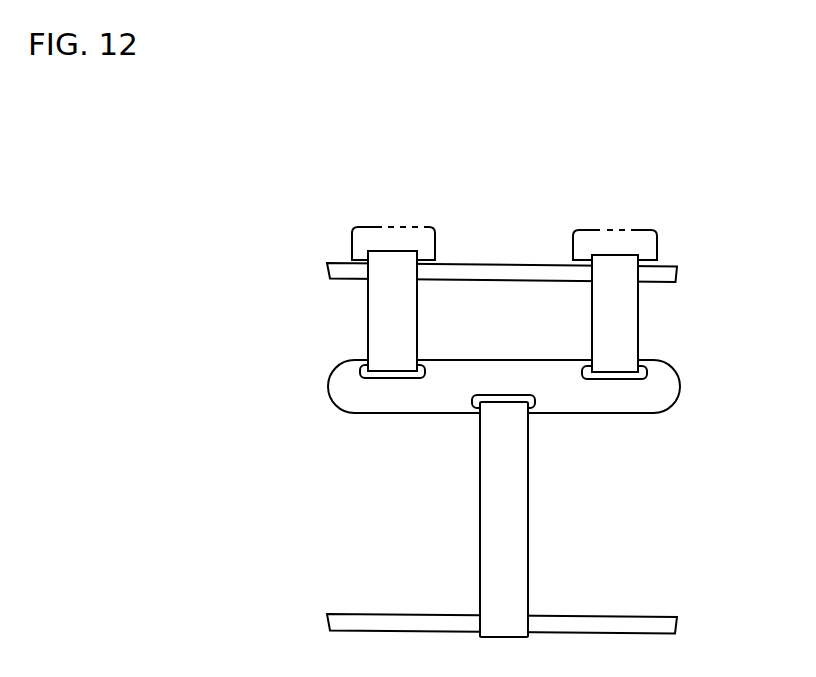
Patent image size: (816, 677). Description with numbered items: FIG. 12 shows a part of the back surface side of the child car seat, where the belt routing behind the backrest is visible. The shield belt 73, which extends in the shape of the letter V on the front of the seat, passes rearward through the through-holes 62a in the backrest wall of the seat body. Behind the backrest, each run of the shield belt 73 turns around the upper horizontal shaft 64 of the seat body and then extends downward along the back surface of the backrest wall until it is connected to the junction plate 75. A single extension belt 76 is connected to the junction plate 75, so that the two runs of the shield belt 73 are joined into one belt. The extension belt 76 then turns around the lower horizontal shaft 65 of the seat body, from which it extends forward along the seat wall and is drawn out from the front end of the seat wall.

The through-holes 62a is at (380, 226).
The upper horizontal shaft 64 is at (503, 263).
The lower horizontal shaft 65 is at (624, 623).
The shield belt 73 is at (377, 322).
The junction plate 75 is at (592, 402).
The extension belt 76 is at (488, 526).